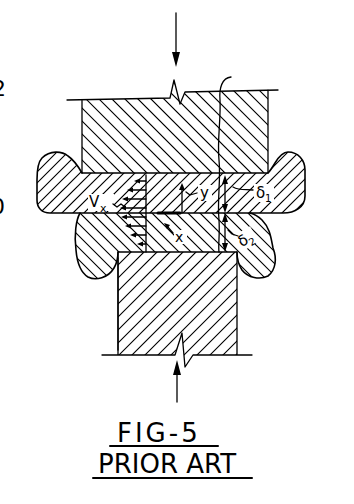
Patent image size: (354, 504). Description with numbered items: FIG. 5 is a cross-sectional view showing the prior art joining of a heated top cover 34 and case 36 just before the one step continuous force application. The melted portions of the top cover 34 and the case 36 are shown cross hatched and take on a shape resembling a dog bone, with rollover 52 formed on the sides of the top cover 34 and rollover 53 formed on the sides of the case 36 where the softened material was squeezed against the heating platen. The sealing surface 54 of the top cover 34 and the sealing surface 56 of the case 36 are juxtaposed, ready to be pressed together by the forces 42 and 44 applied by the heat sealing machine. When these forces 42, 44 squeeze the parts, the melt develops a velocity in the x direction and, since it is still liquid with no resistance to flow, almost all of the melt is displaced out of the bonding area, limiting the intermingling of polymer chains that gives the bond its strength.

The top cover 34 is at (192, 147).
The case 36 is at (192, 321).
The force 42 is at (175, 386).
The force 44 is at (176, 38).
The rollover 52 is at (57, 152).
The rollover 53 is at (93, 278).
The sealing surface 54 is at (237, 159).
The sealing surface 56 is at (117, 308).